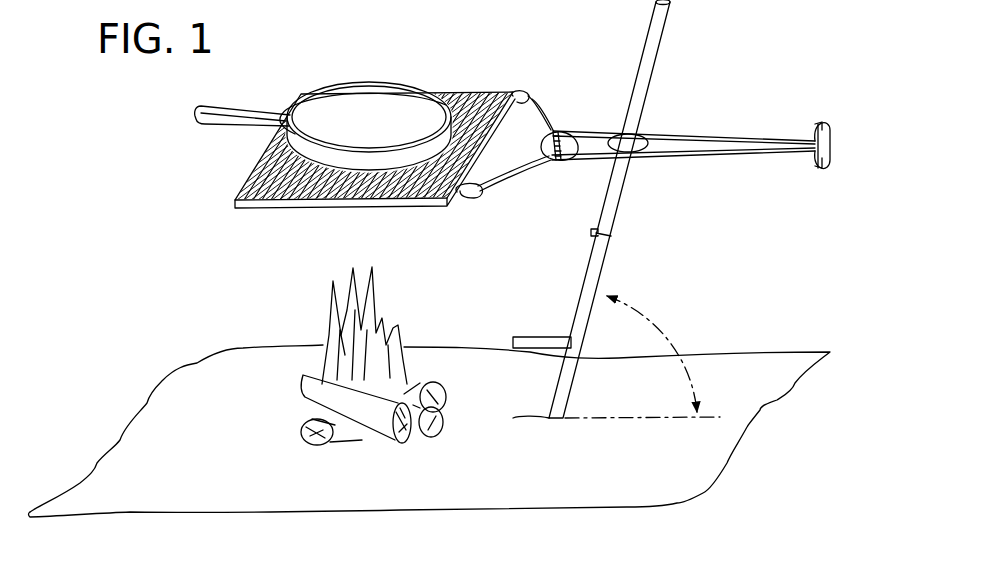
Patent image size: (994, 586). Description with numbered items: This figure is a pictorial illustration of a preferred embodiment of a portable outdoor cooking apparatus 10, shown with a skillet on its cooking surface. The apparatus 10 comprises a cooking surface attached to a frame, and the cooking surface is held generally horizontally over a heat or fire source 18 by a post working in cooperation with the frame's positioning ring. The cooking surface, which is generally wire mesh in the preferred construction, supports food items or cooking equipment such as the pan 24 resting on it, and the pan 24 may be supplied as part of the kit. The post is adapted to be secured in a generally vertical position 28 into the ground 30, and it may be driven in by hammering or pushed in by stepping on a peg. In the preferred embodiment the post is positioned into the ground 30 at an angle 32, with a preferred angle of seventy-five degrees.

The portable outdoor cooking apparatus 10 is at (173, 229).
The heat or fire source 18 is at (337, 313).
The pan 24 is at (375, 93).
The generally vertical position 28 is at (584, 78).
The ground 30 is at (673, 468).
The angle 32 is at (663, 342).